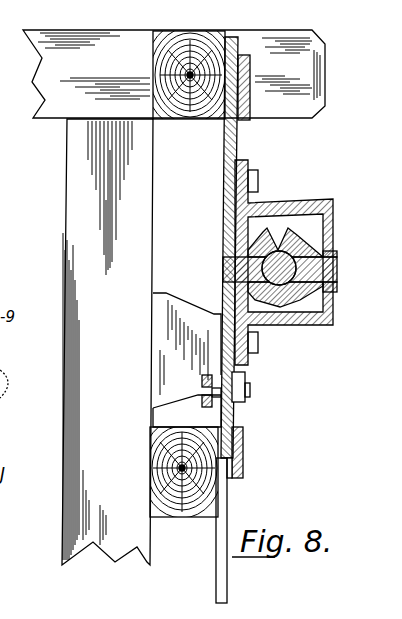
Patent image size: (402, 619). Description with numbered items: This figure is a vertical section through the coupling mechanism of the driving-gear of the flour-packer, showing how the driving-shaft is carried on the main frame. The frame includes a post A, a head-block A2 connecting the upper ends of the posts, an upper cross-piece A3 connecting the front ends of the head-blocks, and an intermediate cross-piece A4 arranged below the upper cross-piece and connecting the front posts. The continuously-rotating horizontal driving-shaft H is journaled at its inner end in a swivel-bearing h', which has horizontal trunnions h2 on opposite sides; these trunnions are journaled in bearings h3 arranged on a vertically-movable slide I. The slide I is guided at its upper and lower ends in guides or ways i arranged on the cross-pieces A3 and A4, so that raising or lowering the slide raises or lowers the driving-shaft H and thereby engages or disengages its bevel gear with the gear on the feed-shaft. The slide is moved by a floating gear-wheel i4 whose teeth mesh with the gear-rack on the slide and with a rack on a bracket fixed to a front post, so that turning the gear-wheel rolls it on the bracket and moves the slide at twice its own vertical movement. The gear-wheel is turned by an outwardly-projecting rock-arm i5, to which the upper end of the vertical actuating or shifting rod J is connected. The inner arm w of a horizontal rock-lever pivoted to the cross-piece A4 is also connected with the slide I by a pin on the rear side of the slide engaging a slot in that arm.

The head-block A2 is at (166, 74).
The upper cross-piece A3 is at (156, 61).
The post A is at (70, 210).
The intermediate cross-piece A4 is at (158, 489).
The vertically-movable slide I is at (225, 150).
The guides or ways i is at (250, 97).
The floating gear-wheel i4 is at (187, 350).
The rock-arm i5 is at (250, 405).
The inner arm w is at (203, 415).
The driving-shaft H is at (283, 280).
The swivel-bearing h' is at (285, 267).
The horizontal trunnions h2 is at (223, 270).
The bearings h3 is at (225, 256).
The actuating or shifting rod J is at (210, 530).